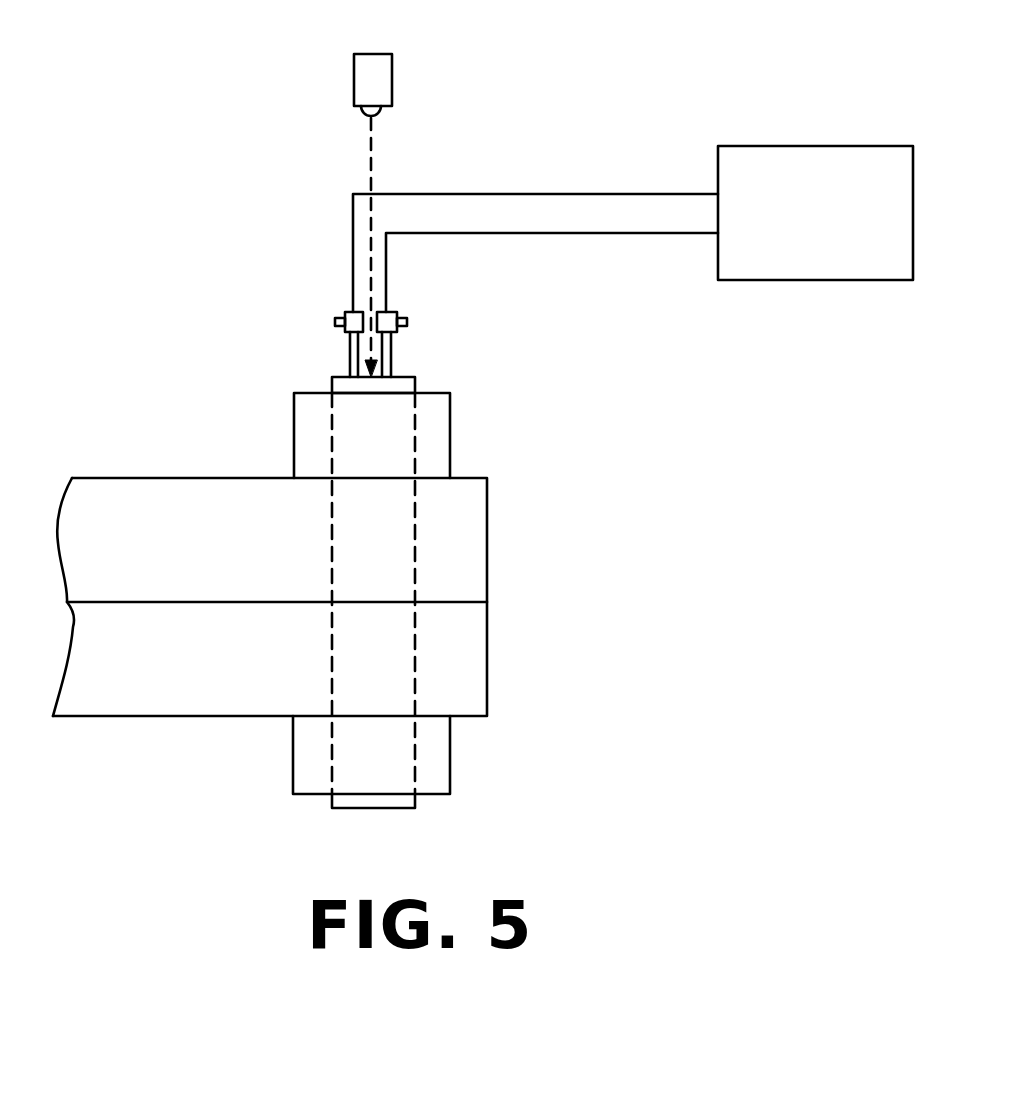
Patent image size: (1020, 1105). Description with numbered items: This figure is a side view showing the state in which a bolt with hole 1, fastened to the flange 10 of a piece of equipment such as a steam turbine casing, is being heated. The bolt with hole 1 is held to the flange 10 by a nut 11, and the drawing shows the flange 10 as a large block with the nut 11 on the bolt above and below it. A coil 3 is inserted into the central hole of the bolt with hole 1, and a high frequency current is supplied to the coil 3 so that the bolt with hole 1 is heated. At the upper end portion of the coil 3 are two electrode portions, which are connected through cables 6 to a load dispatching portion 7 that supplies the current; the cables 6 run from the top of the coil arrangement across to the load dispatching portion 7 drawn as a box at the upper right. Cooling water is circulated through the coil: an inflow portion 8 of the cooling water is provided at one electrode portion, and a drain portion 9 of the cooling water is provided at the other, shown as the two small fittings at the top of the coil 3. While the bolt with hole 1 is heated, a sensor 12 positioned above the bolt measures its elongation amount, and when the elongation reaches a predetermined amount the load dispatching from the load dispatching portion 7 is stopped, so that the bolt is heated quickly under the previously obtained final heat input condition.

The bolt with hole 1 is at (418, 460).
The coil 3 is at (350, 349).
The cables 6 is at (546, 231).
The load dispatching portion 7 is at (812, 146).
The inflow portion 8 is at (397, 312).
The drain portion 9 is at (350, 312).
The flange 10 is at (473, 633).
The nut 11 is at (443, 405).
The sensor 12 is at (392, 73).